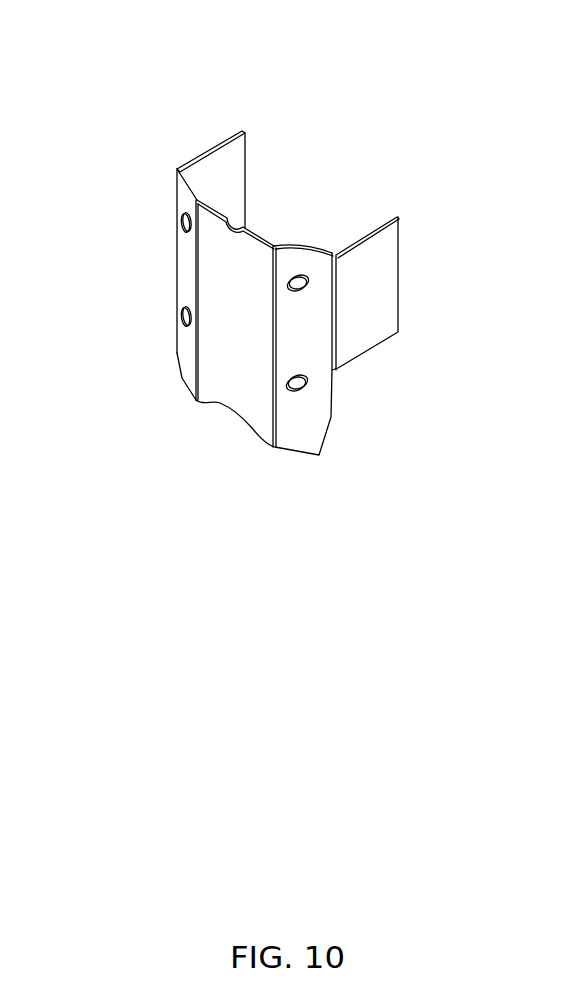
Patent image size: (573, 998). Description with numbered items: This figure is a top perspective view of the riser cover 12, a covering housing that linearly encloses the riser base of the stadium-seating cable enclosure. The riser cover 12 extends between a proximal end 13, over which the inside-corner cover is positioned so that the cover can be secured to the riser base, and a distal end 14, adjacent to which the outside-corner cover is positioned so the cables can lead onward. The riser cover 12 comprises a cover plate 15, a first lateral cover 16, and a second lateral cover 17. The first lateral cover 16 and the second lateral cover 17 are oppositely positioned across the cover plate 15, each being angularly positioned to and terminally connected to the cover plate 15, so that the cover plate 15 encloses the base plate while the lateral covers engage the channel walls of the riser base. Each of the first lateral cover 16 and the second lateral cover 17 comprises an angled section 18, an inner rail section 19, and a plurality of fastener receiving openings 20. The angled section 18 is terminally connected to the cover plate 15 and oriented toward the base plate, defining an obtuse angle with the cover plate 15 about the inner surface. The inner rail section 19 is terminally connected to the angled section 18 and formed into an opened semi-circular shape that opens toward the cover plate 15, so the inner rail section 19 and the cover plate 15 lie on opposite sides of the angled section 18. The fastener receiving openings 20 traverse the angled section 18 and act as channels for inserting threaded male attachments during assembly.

The riser cover 12 is at (358, 90).
The proximal end 13 is at (104, 421).
The distal end 14 is at (103, 188).
The cover plate 15 is at (260, 227).
The first lateral cover 16 is at (392, 302).
The second lateral cover 17 is at (227, 132).
The angled section 18 is at (180, 293).
The inner rail section 19 is at (225, 163).
The fastener receiving openings 20 is at (175, 224).